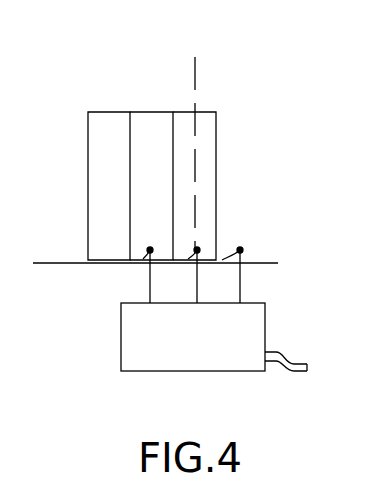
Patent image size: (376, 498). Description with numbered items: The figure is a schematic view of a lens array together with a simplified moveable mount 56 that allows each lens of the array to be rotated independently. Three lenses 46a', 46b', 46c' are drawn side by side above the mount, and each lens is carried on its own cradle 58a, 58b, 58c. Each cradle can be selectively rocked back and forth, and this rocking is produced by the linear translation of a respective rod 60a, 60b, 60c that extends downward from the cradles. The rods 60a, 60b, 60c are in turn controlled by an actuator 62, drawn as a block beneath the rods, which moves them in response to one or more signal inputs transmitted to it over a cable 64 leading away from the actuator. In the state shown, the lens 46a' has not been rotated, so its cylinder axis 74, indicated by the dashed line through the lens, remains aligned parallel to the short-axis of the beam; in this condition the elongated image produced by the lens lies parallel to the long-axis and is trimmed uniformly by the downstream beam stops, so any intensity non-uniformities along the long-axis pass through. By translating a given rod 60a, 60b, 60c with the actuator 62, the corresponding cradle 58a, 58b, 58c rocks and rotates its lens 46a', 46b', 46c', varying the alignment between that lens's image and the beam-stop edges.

The lens 46a' is at (252, 186).
The lens 46b' is at (156, 140).
The lens 46c' is at (111, 140).
The cylinder axis 74 is at (195, 70).
The moveable mount 56 is at (58, 263).
The cradle 58a is at (217, 260).
The cradle 58b is at (188, 258).
The cradle 58c is at (142, 258).
The rod 60a is at (240, 277).
The rod 60b is at (198, 290).
The rod 60c is at (148, 274).
The actuator 62 is at (193, 337).
The cable 64 is at (285, 372).